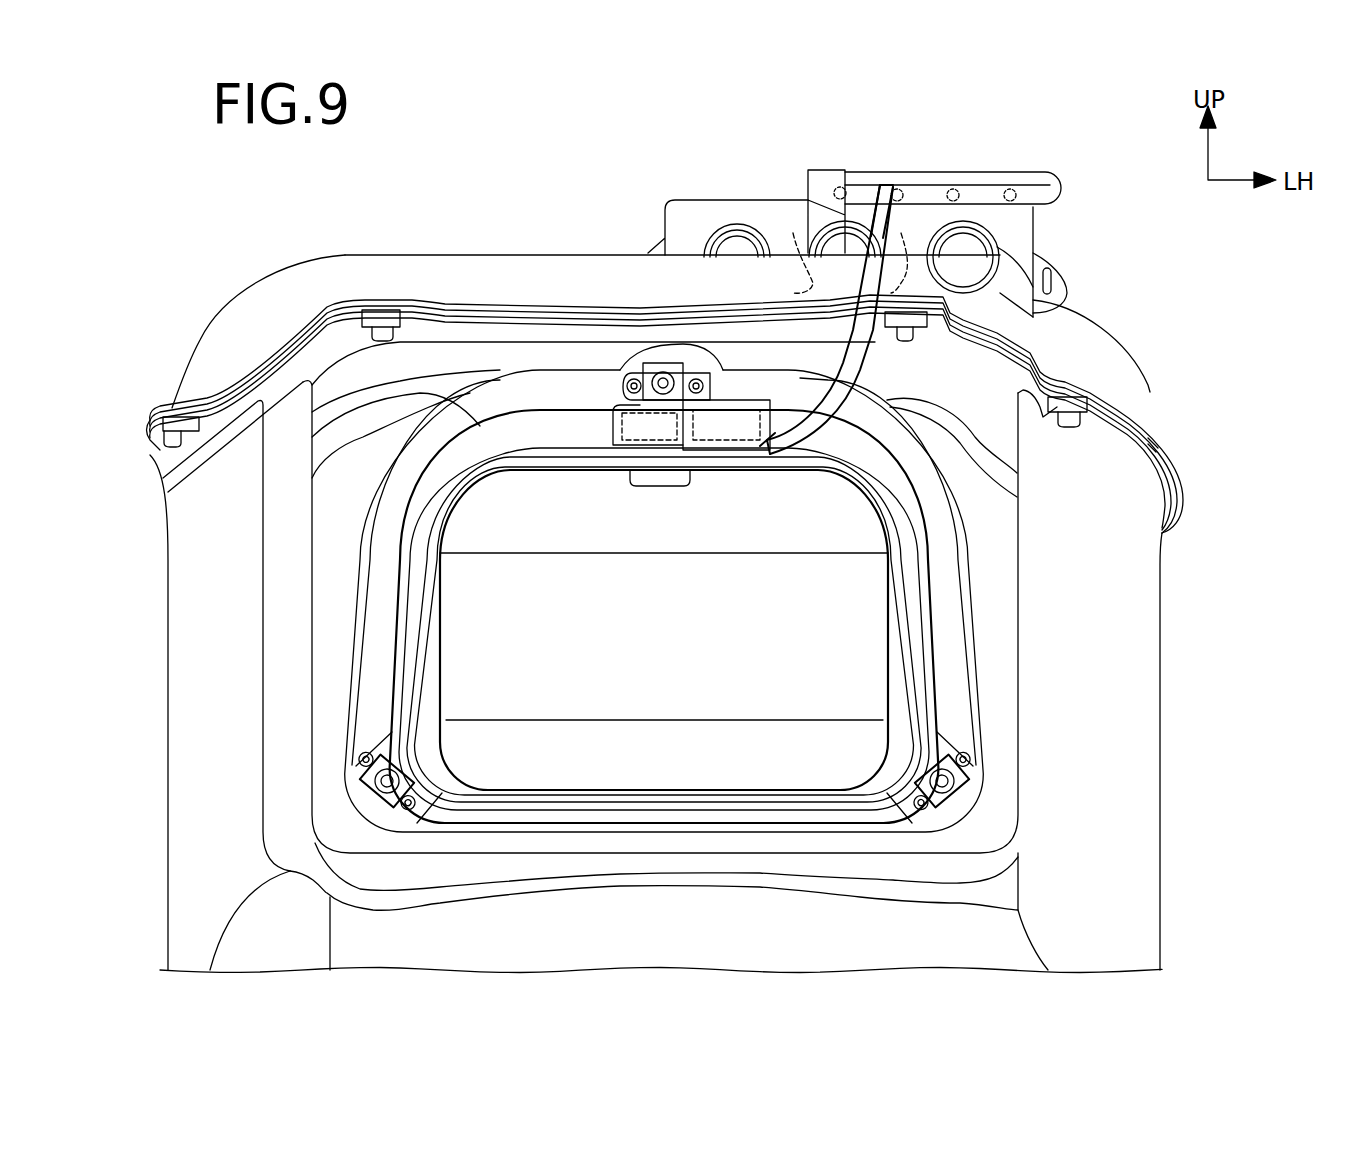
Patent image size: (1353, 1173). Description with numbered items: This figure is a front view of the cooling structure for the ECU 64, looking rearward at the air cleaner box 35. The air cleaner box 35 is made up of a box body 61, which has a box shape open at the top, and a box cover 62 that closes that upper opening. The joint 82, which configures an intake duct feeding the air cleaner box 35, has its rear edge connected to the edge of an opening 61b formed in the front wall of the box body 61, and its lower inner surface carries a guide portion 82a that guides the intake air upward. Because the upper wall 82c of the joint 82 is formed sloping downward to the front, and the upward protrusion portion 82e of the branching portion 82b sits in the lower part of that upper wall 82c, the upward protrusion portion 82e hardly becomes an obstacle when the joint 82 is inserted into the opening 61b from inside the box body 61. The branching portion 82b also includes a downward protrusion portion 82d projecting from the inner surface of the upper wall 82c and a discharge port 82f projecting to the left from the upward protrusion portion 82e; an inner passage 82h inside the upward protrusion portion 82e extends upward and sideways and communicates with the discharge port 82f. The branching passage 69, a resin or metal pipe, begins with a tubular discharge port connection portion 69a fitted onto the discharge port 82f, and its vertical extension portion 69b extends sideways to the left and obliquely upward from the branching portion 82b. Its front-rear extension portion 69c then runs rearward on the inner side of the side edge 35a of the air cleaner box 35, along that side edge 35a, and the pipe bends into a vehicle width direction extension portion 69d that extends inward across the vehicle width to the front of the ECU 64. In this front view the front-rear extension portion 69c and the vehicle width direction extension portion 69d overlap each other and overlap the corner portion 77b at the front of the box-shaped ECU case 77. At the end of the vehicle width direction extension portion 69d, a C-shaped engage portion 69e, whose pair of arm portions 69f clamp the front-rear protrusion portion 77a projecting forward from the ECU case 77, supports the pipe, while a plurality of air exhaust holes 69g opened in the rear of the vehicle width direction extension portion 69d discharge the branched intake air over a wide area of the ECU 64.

The air cleaner box 35 is at (1159, 391).
The side edge 35a is at (1183, 462).
The box body 61 is at (1164, 645).
The opening 61b is at (400, 673).
The box cover 62 is at (205, 338).
The ECU 64 is at (704, 205).
The branching passage 69 is at (845, 352).
The discharge port connection portion 69a is at (747, 455).
The vertical extension portion 69b is at (1002, 288).
The front-rear extension portion 69c is at (1037, 224).
The vehicle width direction extension portion 69d is at (877, 172).
The engage portion 69e is at (912, 208).
The arm portions 69f is at (795, 233).
The air exhaust holes 69g is at (838, 188).
The ECU case 77 is at (732, 220).
The front-rear protrusion portion 77a is at (820, 170).
The corner portion 77b is at (800, 242).
The joint 82 is at (481, 427).
The guide portion 82a is at (801, 758).
The branching portion 82b is at (630, 402).
The upper wall 82c is at (617, 430).
The downward protrusion portion 82d is at (656, 471).
The upward protrusion portion 82e is at (728, 400).
The discharge port 82f is at (700, 345).
The inner passage 82h is at (560, 423).